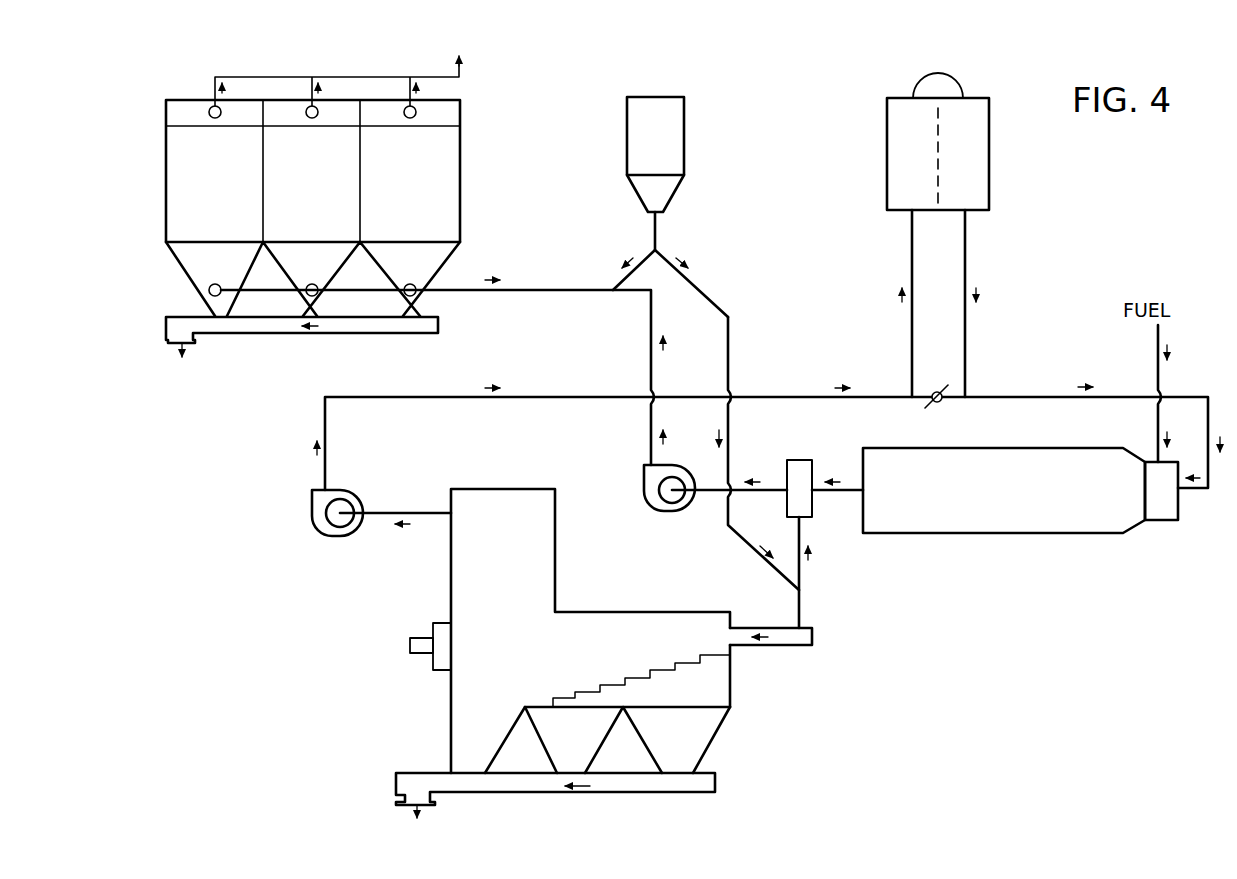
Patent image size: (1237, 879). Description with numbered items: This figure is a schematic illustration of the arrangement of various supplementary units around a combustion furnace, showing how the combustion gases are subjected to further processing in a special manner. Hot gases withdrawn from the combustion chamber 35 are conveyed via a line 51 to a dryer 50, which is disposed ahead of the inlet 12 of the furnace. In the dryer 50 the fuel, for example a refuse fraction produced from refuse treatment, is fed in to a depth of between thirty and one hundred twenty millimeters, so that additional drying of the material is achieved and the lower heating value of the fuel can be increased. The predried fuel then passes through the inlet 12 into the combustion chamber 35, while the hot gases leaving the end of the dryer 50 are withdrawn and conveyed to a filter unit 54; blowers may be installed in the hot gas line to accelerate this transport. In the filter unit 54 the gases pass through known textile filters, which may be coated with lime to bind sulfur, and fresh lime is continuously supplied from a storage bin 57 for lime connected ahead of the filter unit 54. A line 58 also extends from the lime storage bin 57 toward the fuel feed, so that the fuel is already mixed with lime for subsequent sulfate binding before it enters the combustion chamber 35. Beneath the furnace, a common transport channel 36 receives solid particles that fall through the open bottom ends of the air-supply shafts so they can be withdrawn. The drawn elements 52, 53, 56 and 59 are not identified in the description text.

The inlet 12 is at (802, 626).
The combustion chamber 35 is at (516, 565).
The common transport channel 36 is at (396, 783).
The dryer 50 is at (983, 534).
The line 51 is at (394, 510).
The heat exchanger 52 is at (989, 144).
The exhaust gas duct 53 is at (527, 293).
The filter unit 54 is at (460, 147).
The fan 56 is at (310, 505).
The storage bin for lime 57 is at (684, 131).
The line 58 is at (731, 332).
The burner 59 is at (1190, 490).